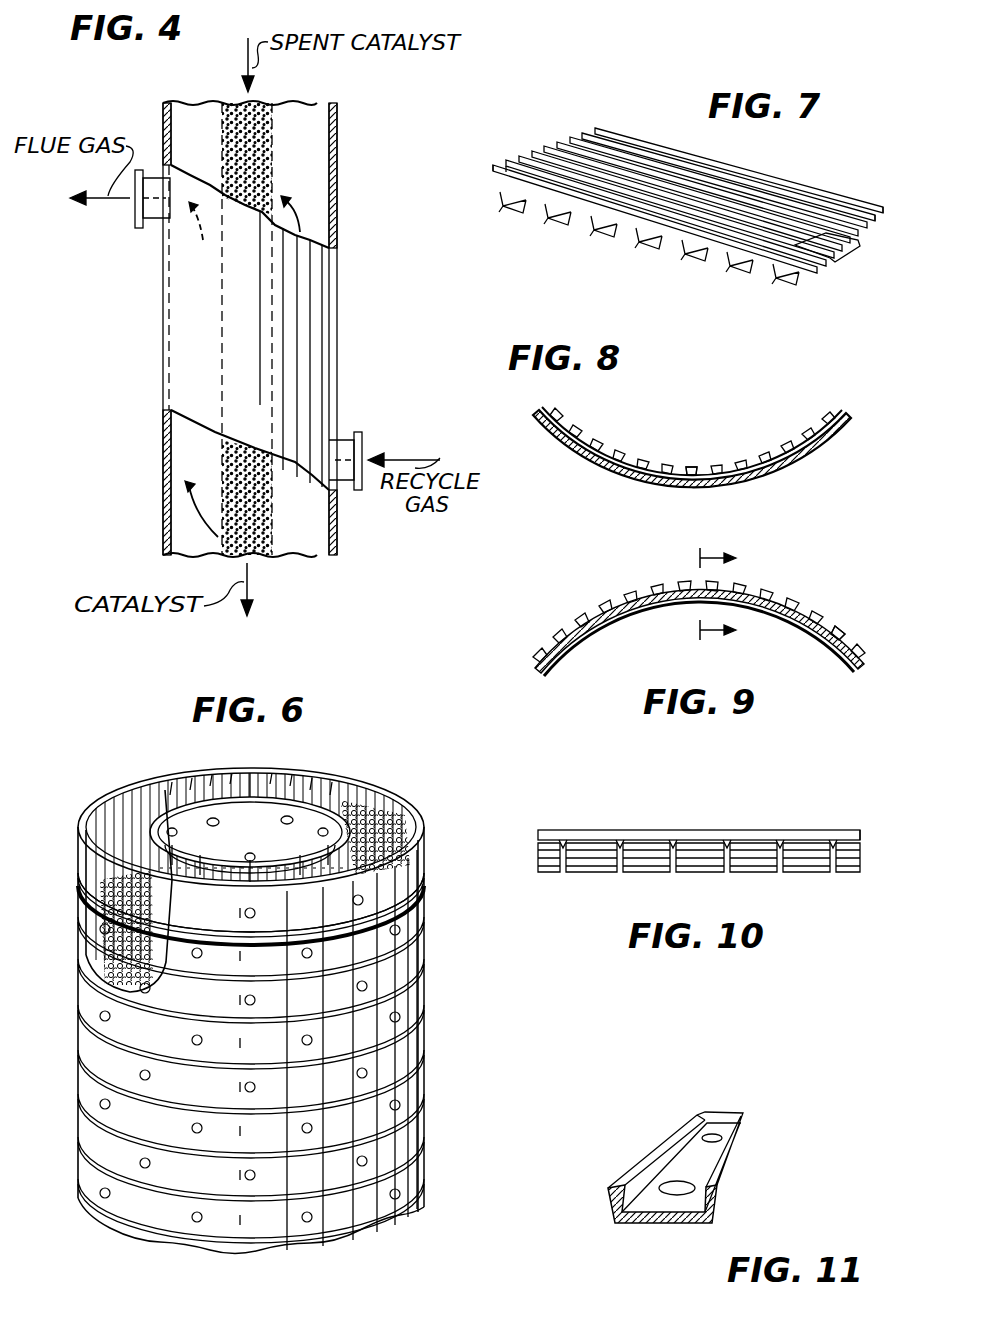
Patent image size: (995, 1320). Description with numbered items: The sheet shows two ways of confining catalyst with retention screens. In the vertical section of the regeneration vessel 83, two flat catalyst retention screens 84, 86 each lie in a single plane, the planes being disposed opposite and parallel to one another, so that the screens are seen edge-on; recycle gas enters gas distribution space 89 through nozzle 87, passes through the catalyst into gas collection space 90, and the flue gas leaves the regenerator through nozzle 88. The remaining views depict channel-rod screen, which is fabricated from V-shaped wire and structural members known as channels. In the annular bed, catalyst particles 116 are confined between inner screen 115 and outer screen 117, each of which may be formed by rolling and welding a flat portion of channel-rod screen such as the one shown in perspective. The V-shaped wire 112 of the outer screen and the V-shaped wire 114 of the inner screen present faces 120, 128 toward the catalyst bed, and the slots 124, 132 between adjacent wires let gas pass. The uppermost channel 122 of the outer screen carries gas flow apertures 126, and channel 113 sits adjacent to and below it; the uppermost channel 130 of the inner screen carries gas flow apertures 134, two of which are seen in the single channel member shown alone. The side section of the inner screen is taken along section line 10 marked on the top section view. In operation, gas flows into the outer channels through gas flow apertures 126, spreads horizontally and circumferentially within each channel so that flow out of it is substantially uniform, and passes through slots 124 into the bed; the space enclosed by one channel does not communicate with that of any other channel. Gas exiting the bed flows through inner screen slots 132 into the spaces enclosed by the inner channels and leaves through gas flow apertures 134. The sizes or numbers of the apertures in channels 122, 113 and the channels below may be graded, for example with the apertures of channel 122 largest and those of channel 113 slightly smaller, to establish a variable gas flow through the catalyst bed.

In FIG. 4, the regeneration vessel 83 is at (338, 208).
In FIG. 4, the catalyst retention screen 84 is at (283, 128).
In FIG. 4, the catalyst retention screen 86 is at (225, 126).
In FIG. 4, the nozzle 87 is at (386, 405).
In FIG. 4, the nozzle 88 is at (142, 228).
In FIG. 4, the gas distribution space 89 is at (318, 183).
In FIG. 4, the gas collection space 90 is at (211, 465).
In FIG. 9, the section line 10 is at (738, 594).
In FIG. 8, the V-shaped wire 112 is at (614, 458).
In FIG. 6, the V-shaped wire 112 is at (222, 792).
In FIG. 6, the channel 113 is at (375, 959).
In FIG. 7, the V-shaped wire 114 is at (884, 210).
In FIG. 9, the V-shaped wire 114 is at (634, 603).
In FIG. 10, the V-shaped wire 114 is at (870, 812).
In FIG. 6, the V-shaped wire 114 is at (168, 880).
In FIG. 6, the inner screen 115 is at (300, 792).
In FIG. 6, the catalyst particles 116 is at (100, 928).
In FIG. 6, the outer screen 117 is at (396, 812).
In FIG. 8, the face of V-shaped wire 120 is at (648, 464).
In FIG. 6, the face of V-shaped wire 120 is at (270, 745).
In FIG. 8, the uppermost channel of outer screen 122 is at (608, 480).
In FIG. 6, the uppermost channel of outer screen 122 is at (80, 847).
In FIG. 8, the slot 124 is at (698, 468).
In FIG. 6, the slot 124 is at (283, 782).
In FIG. 6, the gas flow aperture 126 is at (198, 1040).
In FIG. 7, the face of V-shaped wire 128 is at (578, 134).
In FIG. 9, the face of V-shaped wire 128 is at (786, 608).
In FIG. 10, the face of V-shaped wire 128 is at (592, 830).
In FIG. 6, the face of V-shaped wire 128 is at (236, 895).
In FIG. 9, the uppermost channel of inner screen 130 is at (566, 655).
In FIG. 11, the uppermost channel of inner screen 130 is at (632, 1224).
In FIG. 6, the uppermost channel of inner screen 130 is at (267, 852).
In FIG. 7, the slot 132 is at (532, 153).
In FIG. 9, the slot 132 is at (832, 636).
In FIG. 6, the slot 132 is at (278, 893).
In FIG. 7, the gas flow aperture 134 is at (828, 266).
In FIG. 10, the gas flow aperture 134 is at (700, 845).
In FIG. 11, the gas flow aperture 134 is at (713, 1134).
In FIG. 6, the gas flow aperture 134 is at (284, 817).